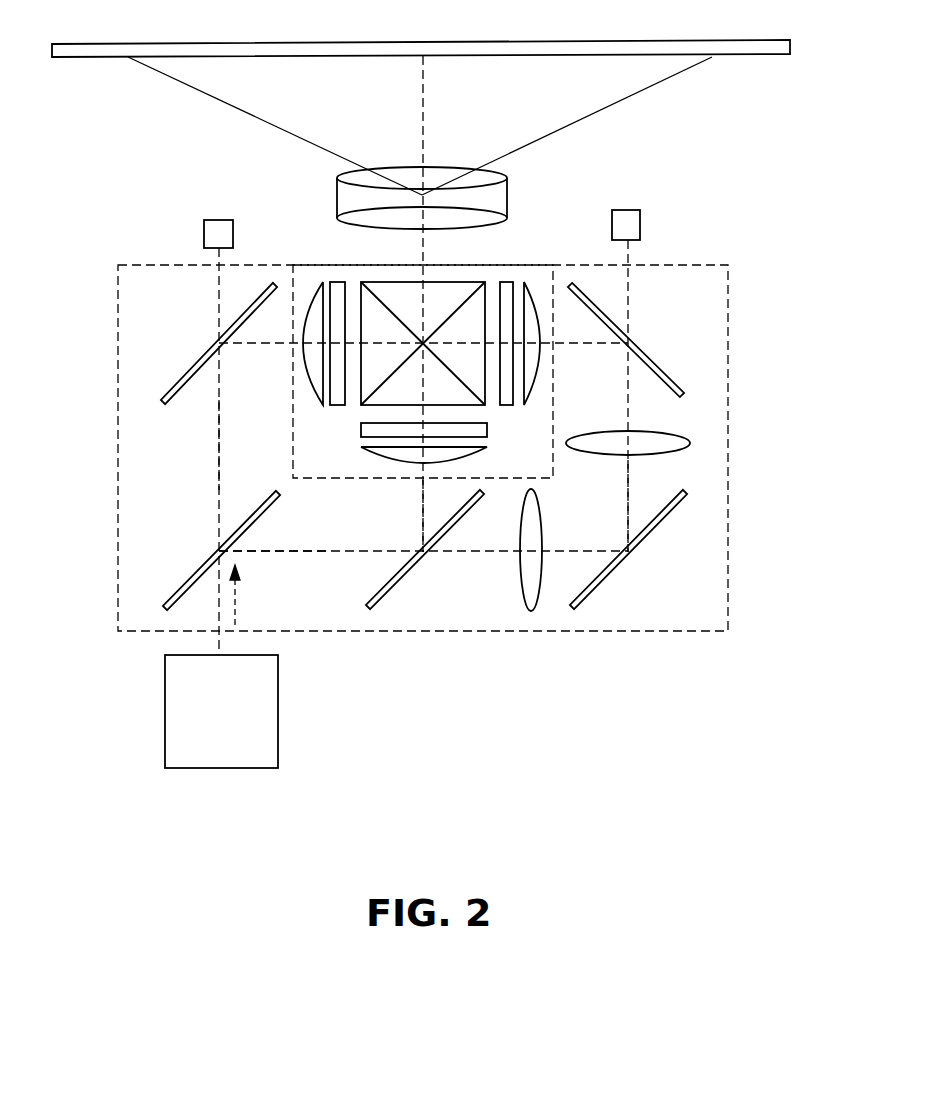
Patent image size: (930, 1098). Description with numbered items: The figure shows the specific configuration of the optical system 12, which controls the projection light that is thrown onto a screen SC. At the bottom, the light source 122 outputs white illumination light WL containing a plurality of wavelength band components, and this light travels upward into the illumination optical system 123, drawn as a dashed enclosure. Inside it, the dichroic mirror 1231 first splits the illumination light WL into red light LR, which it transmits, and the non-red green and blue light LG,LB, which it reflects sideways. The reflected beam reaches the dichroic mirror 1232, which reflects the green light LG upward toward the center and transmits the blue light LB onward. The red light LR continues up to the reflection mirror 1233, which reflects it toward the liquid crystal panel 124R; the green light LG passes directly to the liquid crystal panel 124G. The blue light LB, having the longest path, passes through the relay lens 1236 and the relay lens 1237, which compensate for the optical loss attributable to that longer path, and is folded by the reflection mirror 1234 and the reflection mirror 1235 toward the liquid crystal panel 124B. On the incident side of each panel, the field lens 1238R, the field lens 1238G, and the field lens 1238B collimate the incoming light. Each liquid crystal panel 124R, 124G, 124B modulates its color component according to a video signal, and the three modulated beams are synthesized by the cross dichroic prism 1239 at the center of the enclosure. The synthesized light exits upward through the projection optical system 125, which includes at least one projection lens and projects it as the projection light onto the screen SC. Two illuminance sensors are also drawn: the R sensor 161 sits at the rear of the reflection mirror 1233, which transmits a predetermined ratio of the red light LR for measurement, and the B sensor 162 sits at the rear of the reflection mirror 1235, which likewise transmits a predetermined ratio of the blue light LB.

The optical system 12 is at (700, 212).
The screen SC is at (760, 57).
The projection optical system 125 is at (337, 200).
The R sensor 161 is at (215, 220).
The B sensor 162 is at (625, 210).
The illumination optical system 123 is at (118, 430).
The light source 122 is at (280, 722).
The cross dichroic prism 1239 is at (438, 284).
The liquid crystal panel 124R is at (338, 282).
The liquid crystal panel 124G is at (361, 430).
The liquid crystal panel 124B is at (522, 258).
The field lens 1238R is at (320, 282).
The field lens 1238G is at (361, 455).
The field lens 1238B is at (530, 282).
The dichroic mirror 1231 is at (208, 575).
The dichroic mirror 1232 is at (414, 572).
The reflection mirror 1233 is at (200, 352).
The reflection mirror 1234 is at (603, 589).
The reflection mirror 1235 is at (680, 347).
The relay lens 1236 is at (521, 596).
The relay lens 1237 is at (640, 432).
The illumination light WL is at (238, 617).
The red light LR is at (218, 477).
The green light LG is at (422, 518).
The blue light LB is at (627, 518).
The green light and blue light LG,LB is at (273, 553).